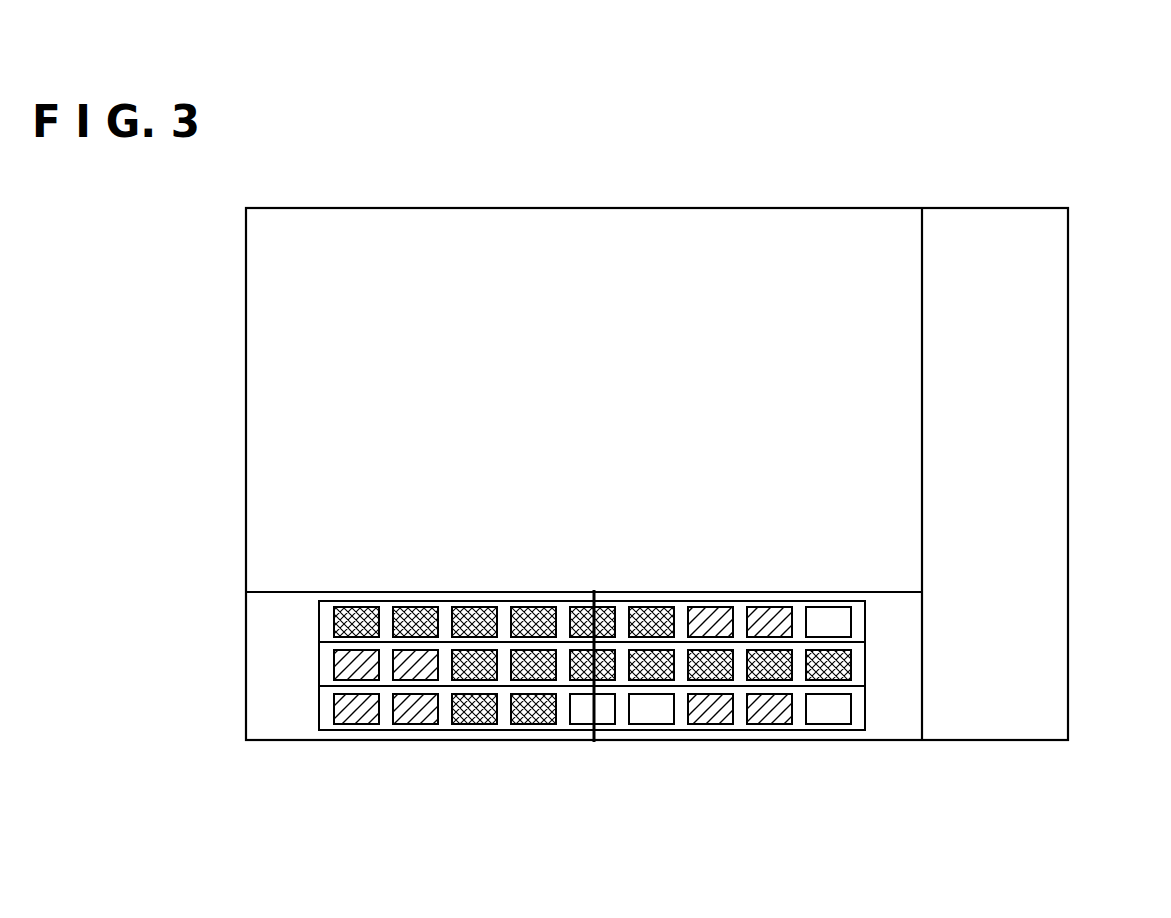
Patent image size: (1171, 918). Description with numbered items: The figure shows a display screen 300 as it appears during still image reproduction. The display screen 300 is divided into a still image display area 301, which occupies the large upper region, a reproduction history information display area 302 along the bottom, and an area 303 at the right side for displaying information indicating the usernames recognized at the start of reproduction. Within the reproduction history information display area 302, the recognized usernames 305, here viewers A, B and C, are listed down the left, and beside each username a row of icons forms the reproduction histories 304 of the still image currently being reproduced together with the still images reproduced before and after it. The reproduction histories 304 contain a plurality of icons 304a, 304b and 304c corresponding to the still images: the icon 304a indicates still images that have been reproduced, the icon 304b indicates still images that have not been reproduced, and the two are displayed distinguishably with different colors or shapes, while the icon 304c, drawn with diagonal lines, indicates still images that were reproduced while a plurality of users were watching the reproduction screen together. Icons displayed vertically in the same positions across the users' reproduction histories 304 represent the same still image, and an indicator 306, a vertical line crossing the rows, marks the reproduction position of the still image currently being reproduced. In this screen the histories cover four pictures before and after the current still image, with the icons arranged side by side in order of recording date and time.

The display screen 300 is at (448, 139).
The still image display area 301 is at (655, 208).
The reproduction history information display area 302 is at (511, 692).
The area for displaying information indicating usernames 303 is at (1068, 258).
The reproduction histories 304 is at (848, 728).
The icon indicating still images that have been reproduced 304a is at (483, 725).
The icon indicating still images that have not been reproduced 304b is at (668, 728).
The icon indicating still images reproduced while a plurality of users watched toget 304c is at (763, 728).
The recognized usernames 305 is at (294, 720).
The indicator 306 is at (596, 742).